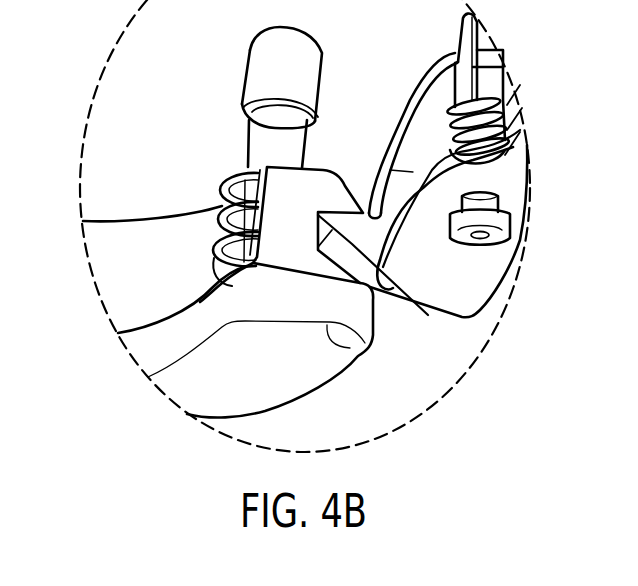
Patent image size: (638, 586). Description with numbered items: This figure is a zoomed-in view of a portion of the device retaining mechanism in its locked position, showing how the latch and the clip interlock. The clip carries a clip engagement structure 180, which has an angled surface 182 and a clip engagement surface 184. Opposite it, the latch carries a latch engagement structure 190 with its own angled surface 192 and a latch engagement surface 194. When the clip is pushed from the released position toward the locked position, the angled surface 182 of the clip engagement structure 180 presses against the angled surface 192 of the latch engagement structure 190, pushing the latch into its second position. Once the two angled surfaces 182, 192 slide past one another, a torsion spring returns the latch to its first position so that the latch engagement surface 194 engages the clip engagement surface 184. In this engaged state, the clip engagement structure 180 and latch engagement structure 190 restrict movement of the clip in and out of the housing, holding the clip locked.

The clip engagement structure 180 is at (278, 143).
The angled surface 182 is at (350, 196).
The clip engagement surface 184 is at (334, 204).
The latch engagement structure 190 is at (316, 312).
The angled surface 192 is at (333, 247).
The latch engagement surface 194 is at (423, 308).